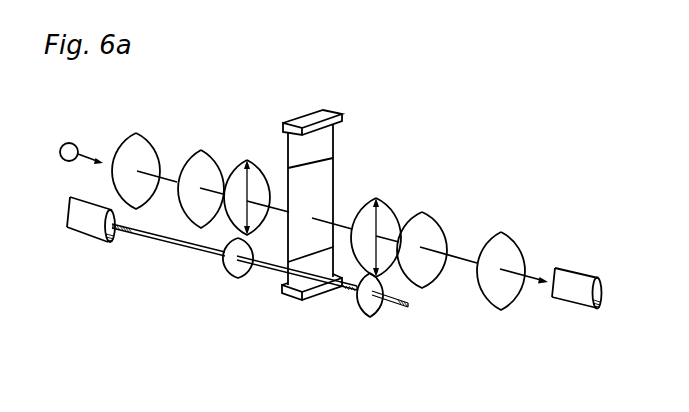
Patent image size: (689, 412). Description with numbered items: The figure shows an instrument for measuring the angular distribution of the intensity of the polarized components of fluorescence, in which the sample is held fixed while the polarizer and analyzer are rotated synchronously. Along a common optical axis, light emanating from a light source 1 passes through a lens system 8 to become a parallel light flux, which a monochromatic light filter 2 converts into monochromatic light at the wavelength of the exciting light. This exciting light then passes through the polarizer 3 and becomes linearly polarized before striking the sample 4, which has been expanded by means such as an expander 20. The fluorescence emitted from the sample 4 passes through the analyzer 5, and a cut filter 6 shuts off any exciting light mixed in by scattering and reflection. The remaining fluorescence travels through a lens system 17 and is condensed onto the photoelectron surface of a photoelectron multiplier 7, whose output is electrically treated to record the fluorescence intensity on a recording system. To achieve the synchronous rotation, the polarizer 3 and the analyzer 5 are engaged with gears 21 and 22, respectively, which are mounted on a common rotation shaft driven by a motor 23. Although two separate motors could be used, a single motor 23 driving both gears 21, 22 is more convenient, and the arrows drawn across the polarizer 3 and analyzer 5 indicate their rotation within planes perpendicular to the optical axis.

The light source 1 is at (68, 143).
The lens system 8 is at (137, 132).
The monochromatic light filter 2 is at (202, 149).
The polarizer 3 is at (248, 158).
The expander 20 is at (341, 114).
The sample 4 is at (333, 188).
The analyzer 5 is at (383, 200).
The cut filter 6 is at (424, 210).
The lens system 17 is at (503, 232).
The photoelectron multiplier 7 is at (578, 276).
The motor 23 is at (84, 237).
The gear 21 is at (236, 280).
The gear 22 is at (372, 318).